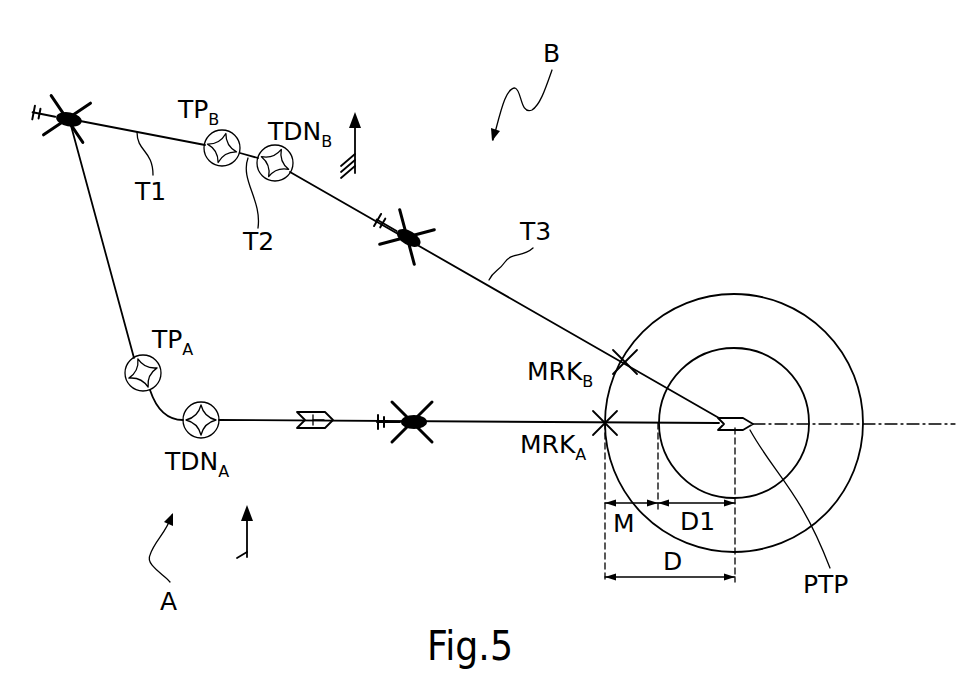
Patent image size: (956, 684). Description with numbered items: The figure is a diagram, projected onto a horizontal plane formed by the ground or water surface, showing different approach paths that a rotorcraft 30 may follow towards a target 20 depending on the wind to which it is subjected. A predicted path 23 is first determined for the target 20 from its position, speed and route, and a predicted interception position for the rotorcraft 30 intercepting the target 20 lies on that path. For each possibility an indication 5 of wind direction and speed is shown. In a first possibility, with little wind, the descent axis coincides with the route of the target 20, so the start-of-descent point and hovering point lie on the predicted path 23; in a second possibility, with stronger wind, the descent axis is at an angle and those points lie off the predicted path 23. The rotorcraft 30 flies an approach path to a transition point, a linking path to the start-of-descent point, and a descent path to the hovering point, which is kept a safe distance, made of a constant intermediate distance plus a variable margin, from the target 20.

The rotorcraft 30 is at (64, 108).
The indication of wind direction and speed 5 is at (355, 145).
The target 20 is at (320, 432).
The predicted path 23 is at (832, 426).